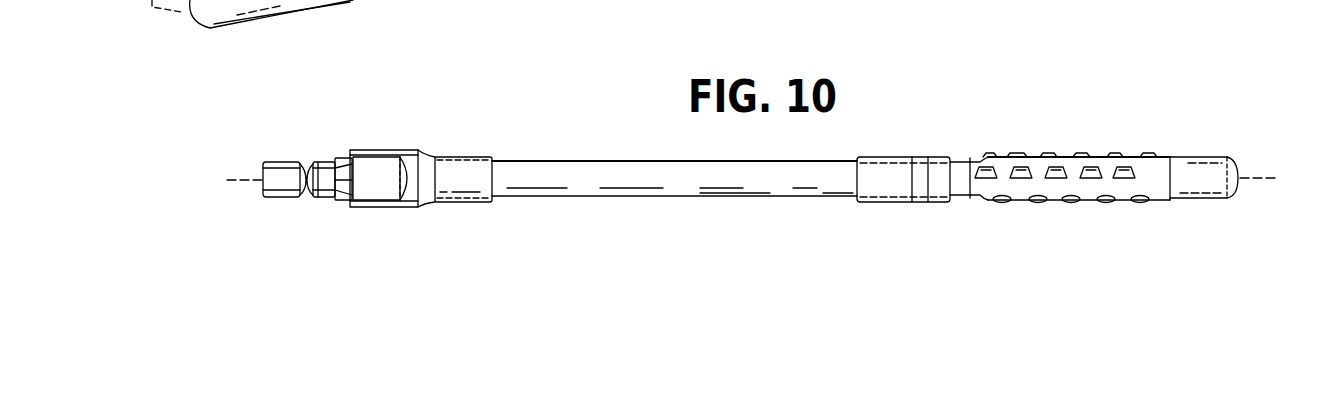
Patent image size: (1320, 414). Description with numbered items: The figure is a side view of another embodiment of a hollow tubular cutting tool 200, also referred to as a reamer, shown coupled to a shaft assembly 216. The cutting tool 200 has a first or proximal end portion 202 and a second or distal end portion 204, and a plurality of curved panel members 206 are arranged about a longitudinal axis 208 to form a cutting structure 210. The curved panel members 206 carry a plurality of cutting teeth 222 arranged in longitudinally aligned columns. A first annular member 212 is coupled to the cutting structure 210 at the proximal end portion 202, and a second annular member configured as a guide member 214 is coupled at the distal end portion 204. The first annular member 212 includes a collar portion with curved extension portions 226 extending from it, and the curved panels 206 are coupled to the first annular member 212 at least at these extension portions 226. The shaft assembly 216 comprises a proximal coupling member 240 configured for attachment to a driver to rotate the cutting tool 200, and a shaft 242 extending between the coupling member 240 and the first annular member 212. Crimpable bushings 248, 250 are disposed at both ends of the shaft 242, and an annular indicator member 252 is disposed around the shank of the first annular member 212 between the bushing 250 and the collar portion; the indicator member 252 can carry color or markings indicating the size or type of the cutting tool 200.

The hollow tubular cutting tool 200 is at (987, 92).
The proximal end portion 202 is at (934, 142).
The distal end portion 204 is at (1232, 162).
The curved panel members 206 is at (1157, 192).
The longitudinal axis 208 is at (1262, 178).
The cutting structure 210 is at (1047, 119).
The first annular member 212 is at (944, 156).
The guide member 214 is at (1188, 158).
The shaft assembly 216 is at (577, 156).
The cutting teeth 222 is at (1072, 204).
The curved extension portions 226 is at (957, 190).
The proximal coupling member 240 is at (398, 157).
The shaft 242 is at (642, 160).
The bushing 248 is at (465, 159).
The bushing 250 is at (878, 158).
The annular indicator member 252 is at (915, 203).